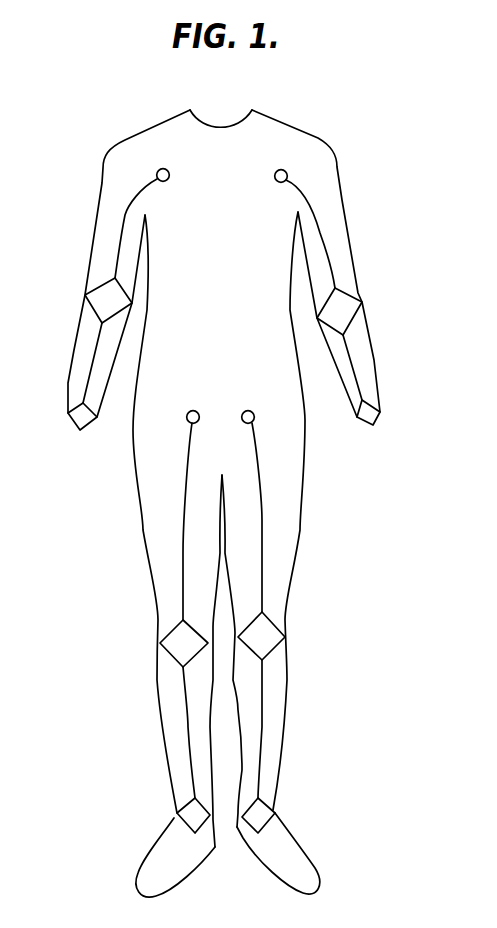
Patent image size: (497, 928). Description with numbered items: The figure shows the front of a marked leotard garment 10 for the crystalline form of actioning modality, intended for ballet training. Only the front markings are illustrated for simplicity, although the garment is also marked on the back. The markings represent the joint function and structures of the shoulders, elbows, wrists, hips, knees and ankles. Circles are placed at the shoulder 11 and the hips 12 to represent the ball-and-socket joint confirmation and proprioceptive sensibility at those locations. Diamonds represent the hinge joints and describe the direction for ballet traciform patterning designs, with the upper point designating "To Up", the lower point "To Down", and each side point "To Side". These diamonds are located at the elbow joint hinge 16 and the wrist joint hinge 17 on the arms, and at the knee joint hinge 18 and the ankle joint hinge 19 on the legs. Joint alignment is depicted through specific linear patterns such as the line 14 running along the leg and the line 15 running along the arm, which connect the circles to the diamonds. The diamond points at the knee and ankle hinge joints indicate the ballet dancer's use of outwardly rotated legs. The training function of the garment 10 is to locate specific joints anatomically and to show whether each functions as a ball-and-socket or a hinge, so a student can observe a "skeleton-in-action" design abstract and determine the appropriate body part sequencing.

The marked leotard garment 10 is at (408, 128).
The shoulder 11 is at (276, 172).
The hips 12 is at (250, 411).
The line 14 is at (262, 518).
The line 15 is at (322, 238).
The elbow joint hinge 16 is at (363, 307).
The wrist joint hinge 17 is at (380, 412).
The knee joint hinge 18 is at (280, 631).
The ankle joint hinge 19 is at (267, 807).